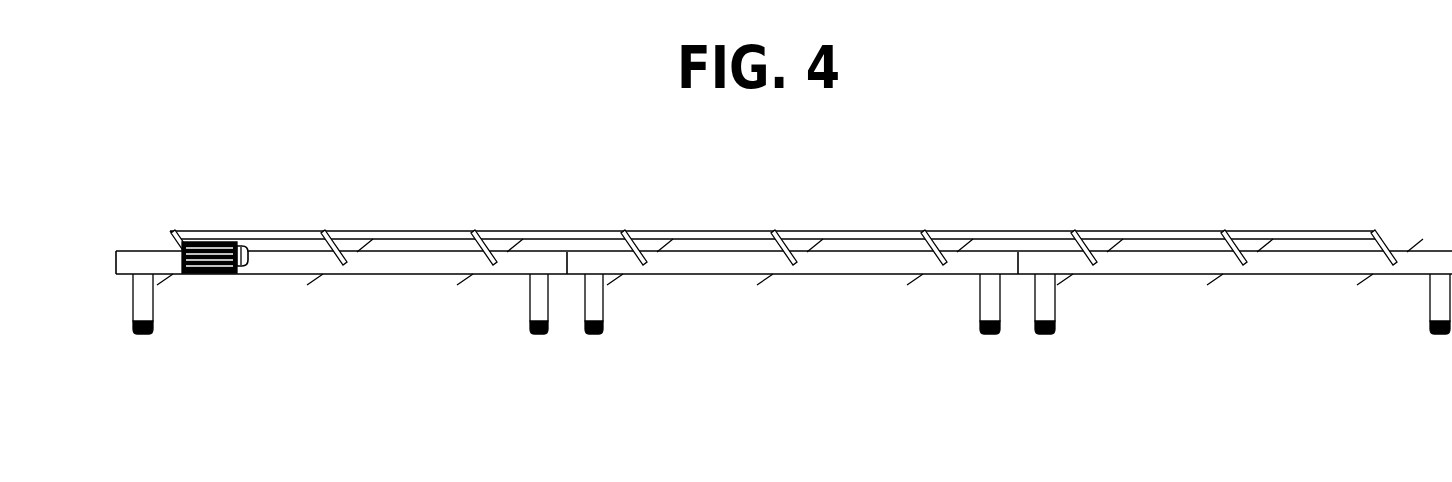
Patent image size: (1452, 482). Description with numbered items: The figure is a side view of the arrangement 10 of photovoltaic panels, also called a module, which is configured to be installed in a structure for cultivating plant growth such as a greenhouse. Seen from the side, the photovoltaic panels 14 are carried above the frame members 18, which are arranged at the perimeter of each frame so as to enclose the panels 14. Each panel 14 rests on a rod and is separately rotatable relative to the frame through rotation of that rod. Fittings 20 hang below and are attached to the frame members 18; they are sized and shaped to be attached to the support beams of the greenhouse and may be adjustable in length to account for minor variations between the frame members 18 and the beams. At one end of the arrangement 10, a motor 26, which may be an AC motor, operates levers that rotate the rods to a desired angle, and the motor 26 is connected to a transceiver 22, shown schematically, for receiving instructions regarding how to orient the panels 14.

The arrangement of photovoltaic panels 10 is at (528, 74).
The photovoltaic panel 14 is at (668, 242).
The frame member 18 is at (1055, 258).
The fitting 20 is at (538, 307).
The transceiver 22 is at (233, 258).
The motor 26 is at (197, 273).